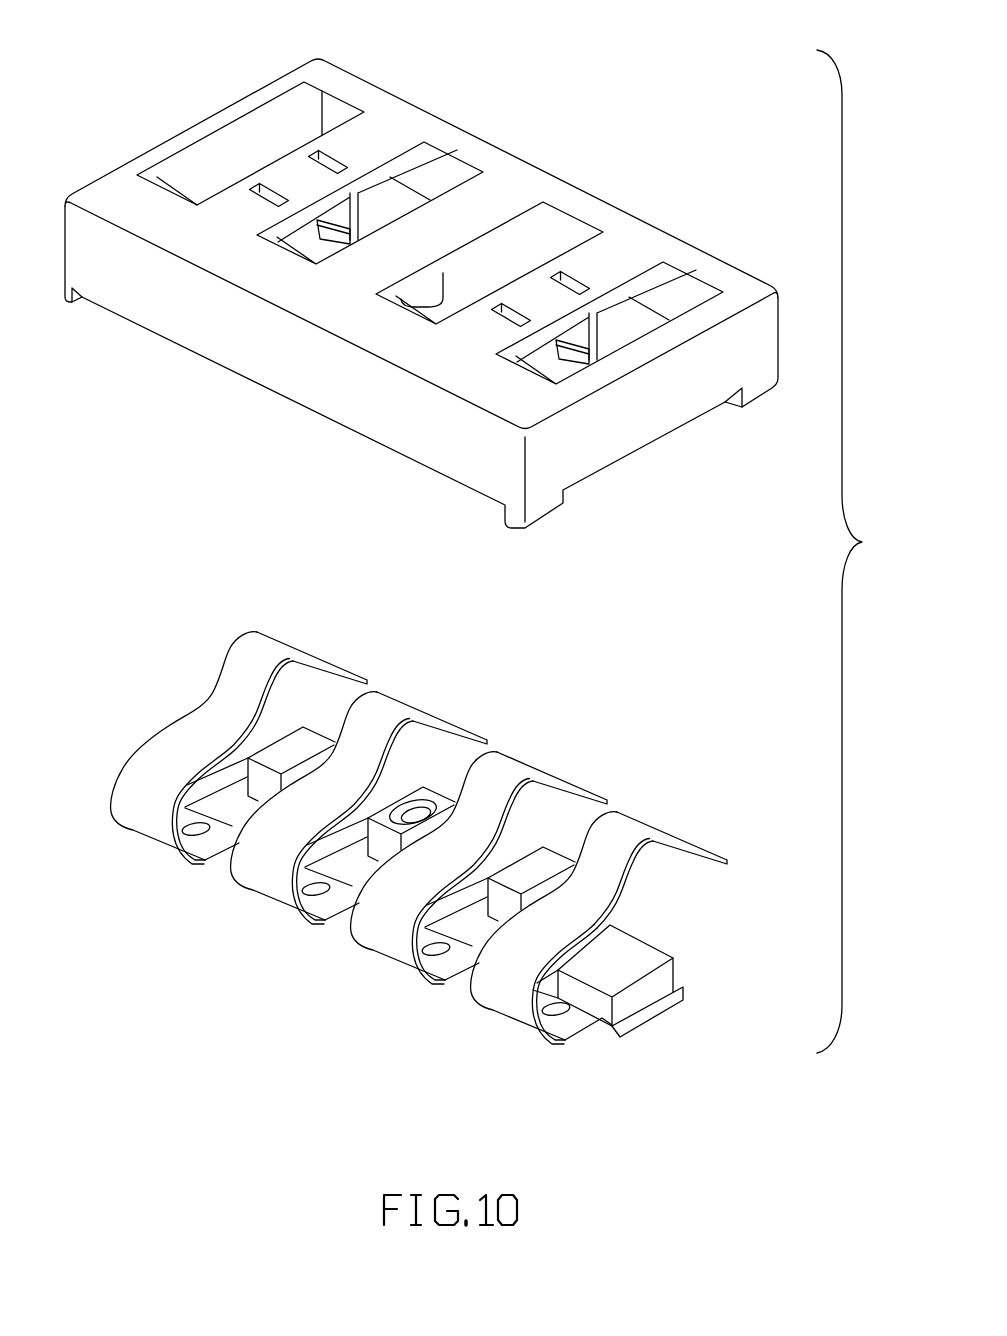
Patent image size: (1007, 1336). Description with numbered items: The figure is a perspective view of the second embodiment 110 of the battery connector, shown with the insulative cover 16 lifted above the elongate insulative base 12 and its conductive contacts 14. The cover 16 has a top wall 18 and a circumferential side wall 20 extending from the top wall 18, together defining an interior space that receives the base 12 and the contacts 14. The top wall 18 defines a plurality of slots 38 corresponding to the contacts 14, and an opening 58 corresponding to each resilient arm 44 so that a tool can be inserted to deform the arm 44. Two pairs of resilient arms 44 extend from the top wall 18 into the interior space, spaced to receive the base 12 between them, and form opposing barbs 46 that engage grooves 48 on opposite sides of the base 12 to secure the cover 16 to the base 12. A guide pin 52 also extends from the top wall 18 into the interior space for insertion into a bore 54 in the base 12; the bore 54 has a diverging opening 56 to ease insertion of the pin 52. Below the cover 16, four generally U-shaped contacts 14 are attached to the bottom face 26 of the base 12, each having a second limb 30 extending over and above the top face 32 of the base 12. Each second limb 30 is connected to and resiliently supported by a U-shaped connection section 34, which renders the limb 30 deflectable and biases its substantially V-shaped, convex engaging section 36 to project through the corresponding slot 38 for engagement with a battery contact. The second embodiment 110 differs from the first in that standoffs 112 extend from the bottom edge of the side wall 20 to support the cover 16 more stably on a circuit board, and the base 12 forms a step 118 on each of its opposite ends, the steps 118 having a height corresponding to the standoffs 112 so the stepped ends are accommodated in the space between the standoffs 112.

The second embodiment of the battery connector 110 is at (865, 551).
The insulative cover 16 is at (414, 266).
The top wall 18 is at (623, 257).
The side wall 20 is at (420, 435).
The slots 38 is at (342, 100).
The opening 58 is at (335, 167).
The resilient arms 44 is at (355, 196).
The barbs 46 is at (352, 235).
The guide pin 52 is at (427, 292).
The standoffs 112 is at (76, 302).
The conductive contacts 14 is at (583, 905).
The insulative base 12 is at (637, 1000).
The second limb 30 is at (557, 920).
The U-shaped connection section 34 is at (522, 975).
The engaging section 36 is at (622, 830).
The top face 32 is at (623, 947).
The bottom face 26 is at (612, 1033).
The step 118 is at (645, 1003).
The grooves 48 is at (247, 817).
The bore 54 is at (423, 823).
The diverging opening 56 is at (417, 805).